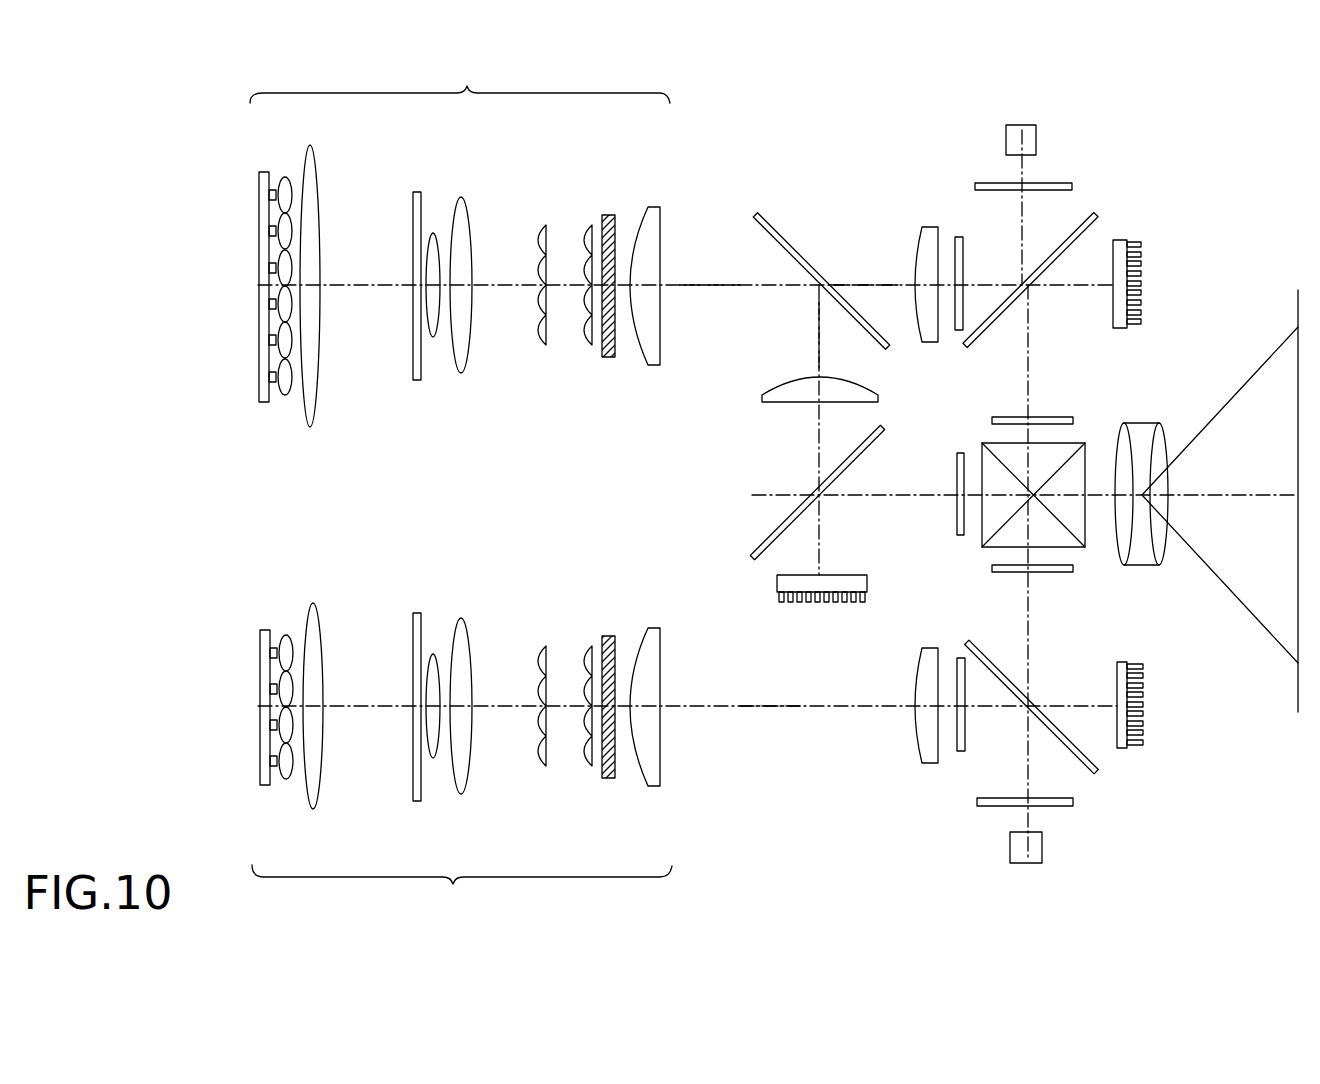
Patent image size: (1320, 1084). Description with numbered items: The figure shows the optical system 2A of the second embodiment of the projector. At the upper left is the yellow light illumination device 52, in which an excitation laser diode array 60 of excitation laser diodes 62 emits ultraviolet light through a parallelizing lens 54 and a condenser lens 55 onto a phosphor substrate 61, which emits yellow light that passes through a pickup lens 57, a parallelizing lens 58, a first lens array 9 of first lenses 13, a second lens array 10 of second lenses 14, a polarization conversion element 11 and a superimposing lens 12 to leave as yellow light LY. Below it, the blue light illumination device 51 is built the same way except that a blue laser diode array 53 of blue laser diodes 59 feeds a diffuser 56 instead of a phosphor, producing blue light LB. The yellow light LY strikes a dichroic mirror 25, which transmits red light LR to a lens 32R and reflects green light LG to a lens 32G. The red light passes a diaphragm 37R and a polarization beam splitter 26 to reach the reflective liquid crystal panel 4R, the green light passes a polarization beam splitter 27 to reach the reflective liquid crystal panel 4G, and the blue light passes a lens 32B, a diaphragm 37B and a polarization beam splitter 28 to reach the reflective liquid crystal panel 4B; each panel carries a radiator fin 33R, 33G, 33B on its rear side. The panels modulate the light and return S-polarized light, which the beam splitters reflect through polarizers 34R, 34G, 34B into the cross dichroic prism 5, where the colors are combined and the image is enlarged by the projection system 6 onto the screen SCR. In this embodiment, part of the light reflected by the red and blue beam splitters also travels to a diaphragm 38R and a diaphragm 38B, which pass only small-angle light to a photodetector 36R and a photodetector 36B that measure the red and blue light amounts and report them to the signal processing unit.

The optical system 2A is at (700, 148).
The reflective liquid crystal panel 4R is at (1174, 246).
The reflective liquid crystal panel 4G is at (848, 599).
The reflective liquid crystal panel 4B is at (1165, 679).
The cross dichroic prism 5 is at (1083, 441).
The projection system 6 is at (1150, 565).
The first lens array 9 is at (543, 362).
The second lens array 10 is at (590, 362).
The polarization conversion element 11 is at (612, 215).
The superimposing lens 12 is at (648, 207).
The first lenses 13 is at (540, 225).
The second lenses 14 is at (587, 225).
The dichroic mirror 25 is at (770, 227).
The polarization beam splitter 26 is at (1000, 318).
The polarization beam splitter 27 is at (866, 450).
The polarization beam splitter 28 is at (995, 664).
The lens 32R is at (921, 240).
The lens 32G is at (775, 385).
The lens 32B is at (927, 650).
The radiator fin 33R is at (1142, 268).
The radiator fin 33G is at (820, 603).
The radiator fin 33B is at (1145, 715).
The polarizer 34R is at (1055, 417).
The polarizer 34G is at (958, 455).
The polarizer 34B is at (1060, 572).
The photodetector 36R is at (1018, 128).
The photodetector 36B is at (1025, 864).
The diaphragm 37R is at (957, 237).
The diaphragm 37B is at (960, 658).
The diaphragm 38R is at (1067, 183).
The diaphragm 38B is at (1075, 802).
The blue light illumination device 51 is at (462, 888).
The yellow light illumination device 52 is at (460, 81).
The blue laser diode array 53 is at (249, 751).
The parallelizing lens 54 is at (288, 177).
The condenser lens 55 is at (316, 427).
The diffuser 56 is at (416, 613).
The pickup lens 57 is at (434, 337).
The parallelizing lens 58 is at (461, 198).
The blue laser diodes 59 is at (271, 690).
The excitation laser diode array 60 is at (248, 282).
The phosphor substrate 61 is at (416, 192).
The excitation laser diodes 62 is at (270, 231).
The yellow light LY is at (705, 282).
The red light LR is at (850, 282).
The green light LG is at (818, 313).
The blue light LB is at (792, 710).
The screen SCR is at (1298, 698).